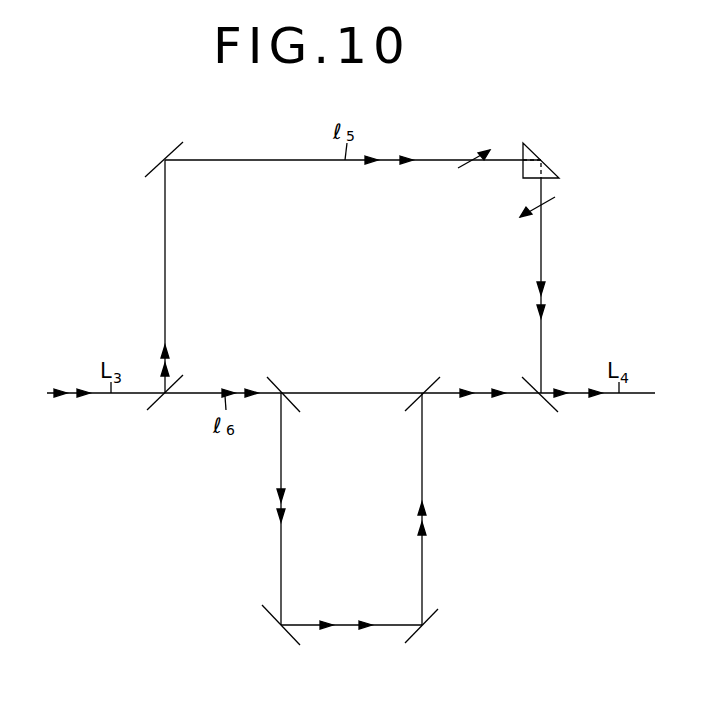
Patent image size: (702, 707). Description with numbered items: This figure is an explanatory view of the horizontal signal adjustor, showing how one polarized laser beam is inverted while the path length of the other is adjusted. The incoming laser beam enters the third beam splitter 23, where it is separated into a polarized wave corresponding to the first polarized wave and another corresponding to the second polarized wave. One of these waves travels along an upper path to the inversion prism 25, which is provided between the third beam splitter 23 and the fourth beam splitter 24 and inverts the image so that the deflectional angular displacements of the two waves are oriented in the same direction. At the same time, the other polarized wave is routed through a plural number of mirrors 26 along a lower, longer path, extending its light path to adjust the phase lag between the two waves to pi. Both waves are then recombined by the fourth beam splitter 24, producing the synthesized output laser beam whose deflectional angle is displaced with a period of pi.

The third beam splitter 23 is at (158, 398).
The fourth beam splitter 24 is at (545, 402).
The inversion prism 25 is at (536, 152).
The mirrors 26 is at (163, 155).